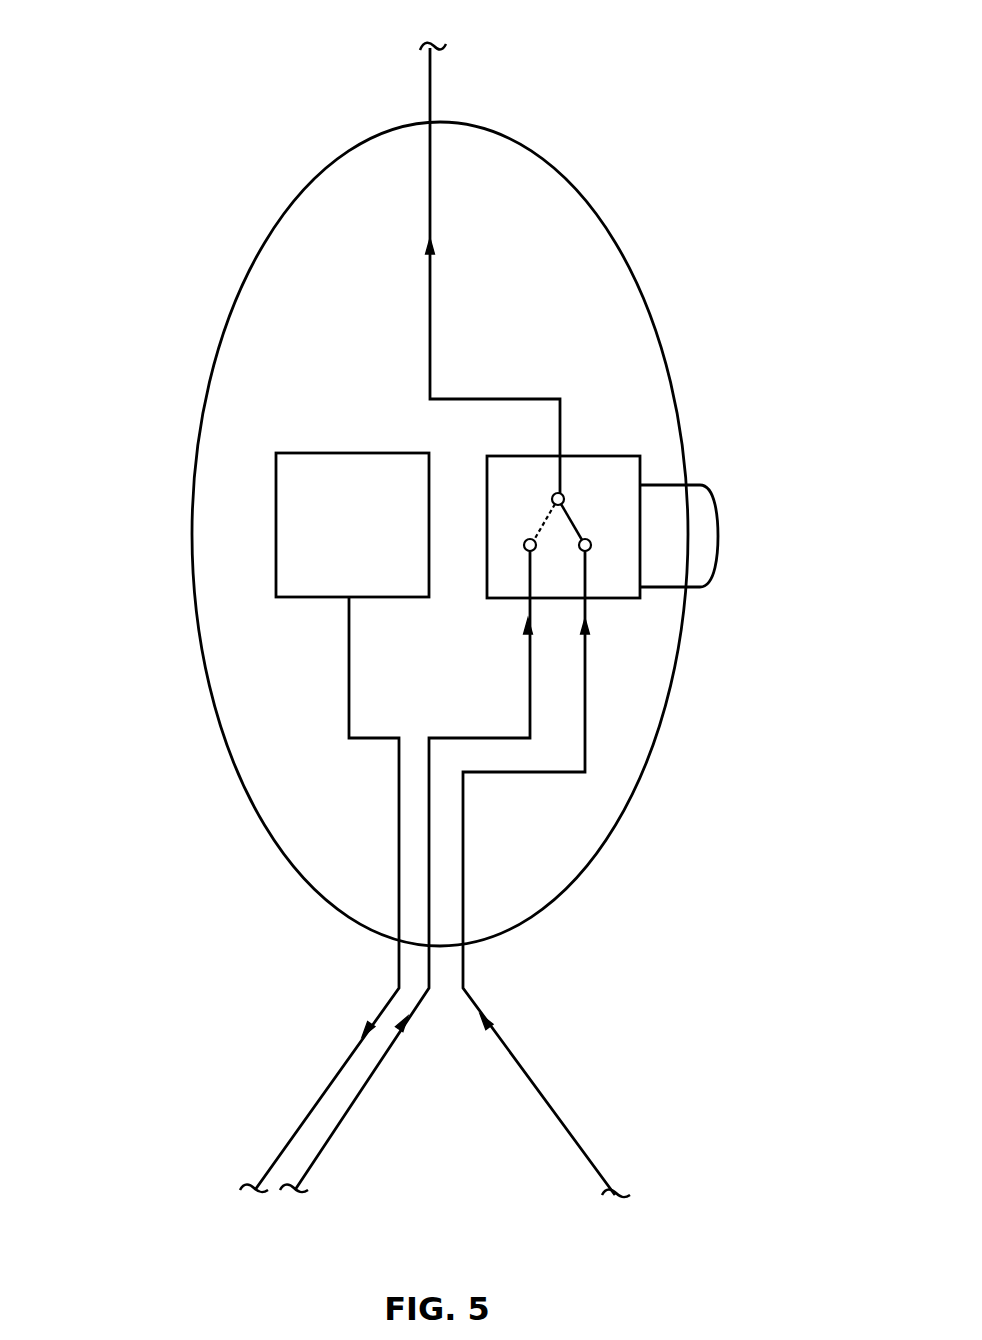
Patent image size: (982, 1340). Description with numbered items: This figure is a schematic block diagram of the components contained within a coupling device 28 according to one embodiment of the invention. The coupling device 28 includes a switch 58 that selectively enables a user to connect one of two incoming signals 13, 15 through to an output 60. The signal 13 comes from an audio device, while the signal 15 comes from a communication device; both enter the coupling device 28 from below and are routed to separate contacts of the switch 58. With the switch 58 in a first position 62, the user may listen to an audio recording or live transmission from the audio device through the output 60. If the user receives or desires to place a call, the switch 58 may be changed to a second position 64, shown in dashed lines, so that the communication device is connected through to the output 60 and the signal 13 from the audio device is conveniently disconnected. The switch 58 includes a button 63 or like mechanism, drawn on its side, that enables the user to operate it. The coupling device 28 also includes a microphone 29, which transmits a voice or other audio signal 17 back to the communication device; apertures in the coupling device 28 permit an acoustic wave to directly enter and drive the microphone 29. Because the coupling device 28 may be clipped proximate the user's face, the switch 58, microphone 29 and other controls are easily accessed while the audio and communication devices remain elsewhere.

The coupling device 28 is at (163, 76).
The microphone 29 is at (337, 575).
The switch 58 is at (625, 466).
The output 60 is at (432, 320).
The first position 62 is at (548, 537).
The button 63 is at (705, 515).
The second position 64 is at (538, 526).
The voice or other audio signal 17 is at (333, 1075).
The signal 15 is at (345, 1117).
The signal 13 is at (562, 1120).